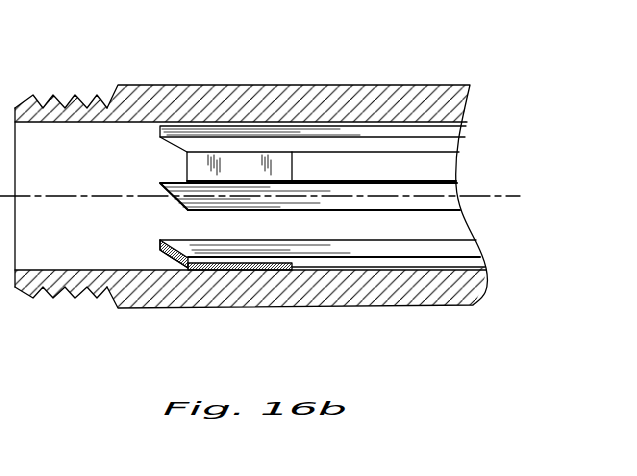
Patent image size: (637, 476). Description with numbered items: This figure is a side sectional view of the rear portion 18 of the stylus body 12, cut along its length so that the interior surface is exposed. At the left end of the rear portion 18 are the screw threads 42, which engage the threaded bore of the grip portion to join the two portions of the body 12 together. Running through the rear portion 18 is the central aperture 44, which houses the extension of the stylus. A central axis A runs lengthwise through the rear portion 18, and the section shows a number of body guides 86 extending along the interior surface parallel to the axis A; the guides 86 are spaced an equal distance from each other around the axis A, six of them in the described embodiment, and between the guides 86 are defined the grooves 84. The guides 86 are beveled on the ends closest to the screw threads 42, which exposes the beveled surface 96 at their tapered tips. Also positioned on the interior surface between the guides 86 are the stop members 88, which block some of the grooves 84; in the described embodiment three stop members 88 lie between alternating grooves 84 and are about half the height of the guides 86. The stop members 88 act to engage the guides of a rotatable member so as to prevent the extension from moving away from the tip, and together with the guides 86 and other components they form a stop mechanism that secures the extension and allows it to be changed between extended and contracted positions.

The stylus body 12 is at (153, 41).
The rear portion 18 is at (275, 85).
The screw threads 42 is at (60, 97).
The central aperture 44 is at (78, 181).
The grooves 84 is at (442, 165).
The body guides 86 is at (185, 150).
The stop members 88 is at (292, 166).
The beveled surface 96 is at (172, 205).
The central axis A is at (485, 196).